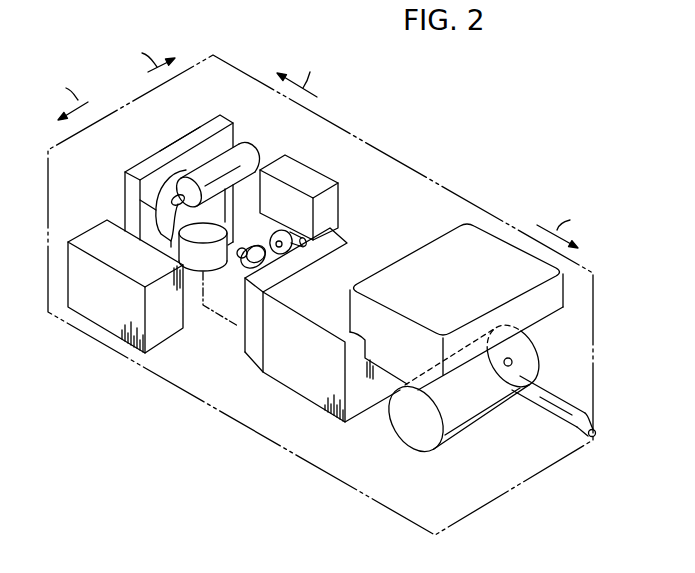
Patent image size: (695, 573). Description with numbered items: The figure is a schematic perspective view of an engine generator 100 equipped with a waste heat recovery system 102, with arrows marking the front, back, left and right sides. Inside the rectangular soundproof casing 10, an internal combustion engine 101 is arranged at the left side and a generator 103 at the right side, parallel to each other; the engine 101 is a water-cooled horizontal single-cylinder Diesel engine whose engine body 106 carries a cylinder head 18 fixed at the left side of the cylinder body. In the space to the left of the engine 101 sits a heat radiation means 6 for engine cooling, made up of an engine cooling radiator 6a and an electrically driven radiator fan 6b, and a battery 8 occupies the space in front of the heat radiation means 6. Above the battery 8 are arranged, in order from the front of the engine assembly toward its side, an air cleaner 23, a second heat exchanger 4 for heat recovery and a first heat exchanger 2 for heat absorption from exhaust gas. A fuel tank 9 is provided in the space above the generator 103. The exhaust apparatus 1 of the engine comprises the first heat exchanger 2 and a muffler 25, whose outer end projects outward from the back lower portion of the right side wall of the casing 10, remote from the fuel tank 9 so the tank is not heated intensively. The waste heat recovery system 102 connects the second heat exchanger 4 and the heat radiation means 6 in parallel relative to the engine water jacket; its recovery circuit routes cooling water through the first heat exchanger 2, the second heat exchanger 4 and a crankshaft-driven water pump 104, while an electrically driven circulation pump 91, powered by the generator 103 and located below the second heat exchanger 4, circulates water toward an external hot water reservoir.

The exhaust apparatus 1 is at (565, 405).
The first heat exchanger 2 is at (302, 170).
The second heat exchanger 4 is at (208, 144).
The heat radiation means 6 is at (122, 116).
The engine cooling radiator 6a is at (177, 147).
The radiator fan 6b is at (167, 197).
The battery 8 is at (98, 317).
The fuel tank 9 is at (488, 233).
The soundproof casing 10 is at (390, 157).
The cylinder head 18 is at (250, 337).
The air cleaner 23 is at (187, 253).
The muffler 25 is at (547, 418).
The circulation pump 91 is at (245, 260).
The engine generator 100 is at (333, 281).
The internal combustion engine 101 is at (308, 375).
The waste heat recovery system 102 is at (249, 126).
The generator 103 is at (412, 442).
The water pump 104 is at (272, 230).
The engine body 106 is at (316, 406).